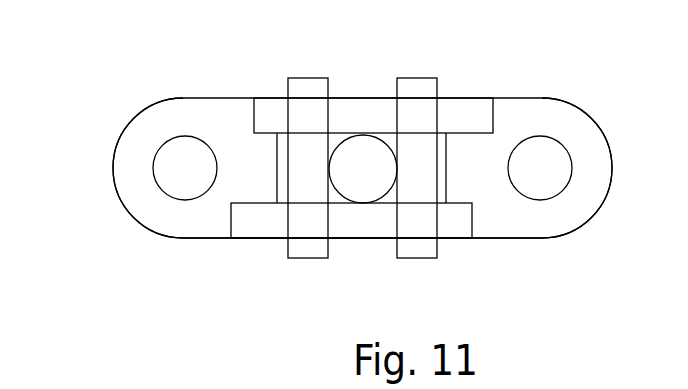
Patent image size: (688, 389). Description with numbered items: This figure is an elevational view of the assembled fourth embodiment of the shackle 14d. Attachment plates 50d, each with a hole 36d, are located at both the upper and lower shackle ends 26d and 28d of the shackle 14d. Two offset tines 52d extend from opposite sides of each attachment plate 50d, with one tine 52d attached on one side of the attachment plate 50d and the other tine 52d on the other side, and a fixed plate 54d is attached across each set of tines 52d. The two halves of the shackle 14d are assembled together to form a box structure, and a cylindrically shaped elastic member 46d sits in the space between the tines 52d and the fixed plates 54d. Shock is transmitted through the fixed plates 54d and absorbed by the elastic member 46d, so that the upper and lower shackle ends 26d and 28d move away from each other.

The shackle 14d is at (393, 128).
The upper shackle end 26d is at (132, 120).
The lower shackle end 28d is at (587, 118).
The hole 36d is at (185, 166).
The elastic member 46d is at (362, 167).
The attachment plate 50d is at (155, 220).
The tine 52d is at (365, 117).
The fixed plate 54d is at (303, 88).